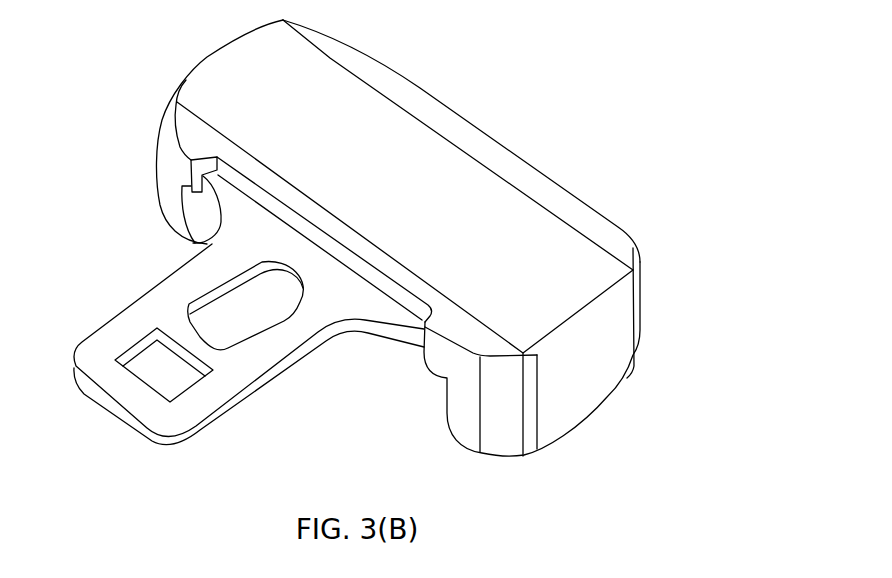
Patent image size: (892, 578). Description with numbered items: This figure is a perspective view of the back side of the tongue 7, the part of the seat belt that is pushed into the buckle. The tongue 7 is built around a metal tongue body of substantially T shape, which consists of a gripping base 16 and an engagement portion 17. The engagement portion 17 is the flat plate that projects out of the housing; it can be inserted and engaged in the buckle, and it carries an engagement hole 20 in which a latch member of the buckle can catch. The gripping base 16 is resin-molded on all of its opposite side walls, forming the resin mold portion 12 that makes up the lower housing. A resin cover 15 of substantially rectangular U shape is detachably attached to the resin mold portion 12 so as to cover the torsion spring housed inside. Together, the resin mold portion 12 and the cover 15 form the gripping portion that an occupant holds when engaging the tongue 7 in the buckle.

The tongue 7 is at (398, 242).
The resin mold portion 12 is at (532, 365).
The cover 15 is at (396, 184).
The gripping base 16 is at (386, 313).
The engagement portion 17 is at (249, 344).
The engagement hole 20 is at (146, 378).